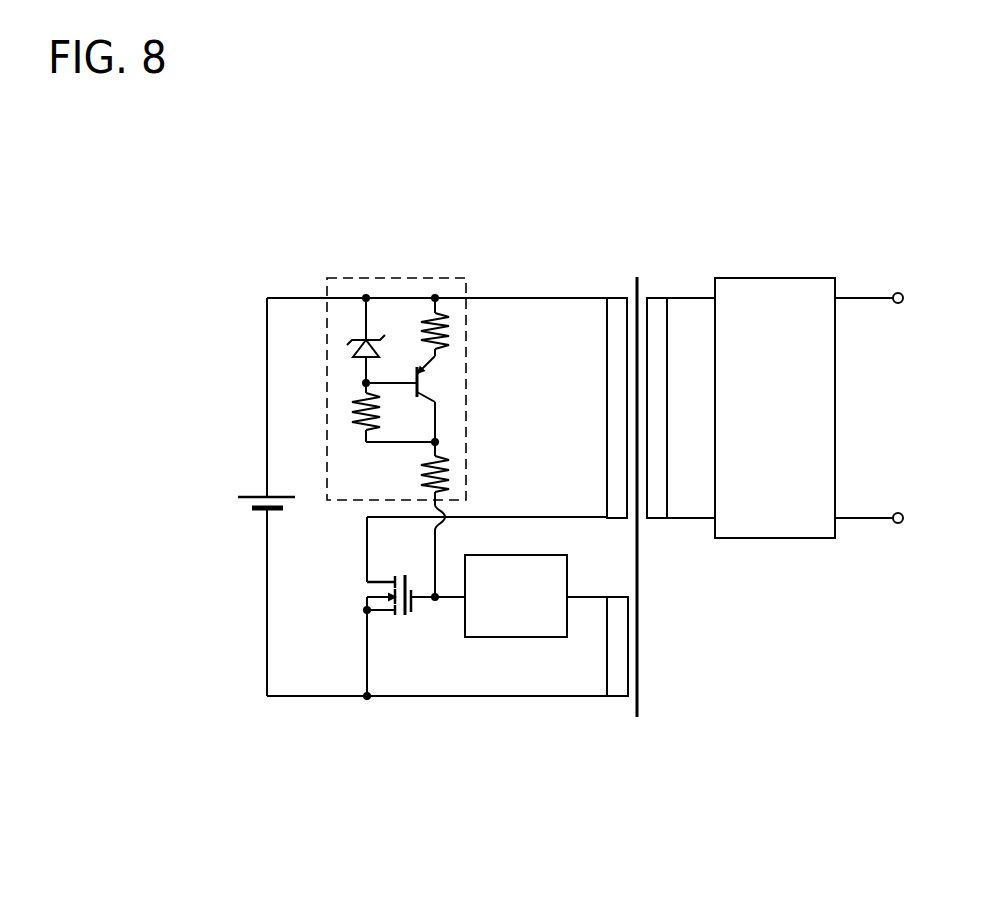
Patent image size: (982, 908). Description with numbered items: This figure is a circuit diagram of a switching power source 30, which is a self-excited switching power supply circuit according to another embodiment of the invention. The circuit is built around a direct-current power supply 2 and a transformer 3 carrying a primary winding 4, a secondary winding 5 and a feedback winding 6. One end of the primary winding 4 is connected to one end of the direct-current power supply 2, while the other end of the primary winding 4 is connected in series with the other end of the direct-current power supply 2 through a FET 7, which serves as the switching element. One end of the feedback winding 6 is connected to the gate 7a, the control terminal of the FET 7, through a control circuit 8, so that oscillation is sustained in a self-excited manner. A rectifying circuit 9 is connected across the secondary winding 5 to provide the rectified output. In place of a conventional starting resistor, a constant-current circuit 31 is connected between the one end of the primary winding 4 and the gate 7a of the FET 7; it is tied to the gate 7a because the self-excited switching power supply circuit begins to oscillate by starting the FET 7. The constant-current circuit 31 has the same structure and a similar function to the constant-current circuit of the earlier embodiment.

The switching power source 30 is at (226, 258).
The constant-current circuit 31 is at (383, 278).
The direct-current power supply 2 is at (250, 492).
The transformer 3 is at (640, 273).
The primary winding 4 is at (610, 294).
The secondary winding 5 is at (660, 294).
The feedback winding 6 is at (617, 700).
The FET 7 is at (350, 600).
The gate 7a is at (411, 610).
The control circuit 8 is at (517, 638).
The rectifying circuit 9 is at (776, 276).